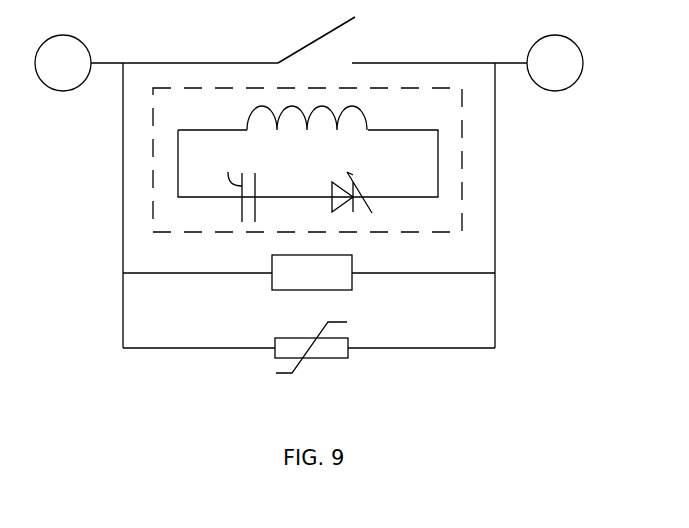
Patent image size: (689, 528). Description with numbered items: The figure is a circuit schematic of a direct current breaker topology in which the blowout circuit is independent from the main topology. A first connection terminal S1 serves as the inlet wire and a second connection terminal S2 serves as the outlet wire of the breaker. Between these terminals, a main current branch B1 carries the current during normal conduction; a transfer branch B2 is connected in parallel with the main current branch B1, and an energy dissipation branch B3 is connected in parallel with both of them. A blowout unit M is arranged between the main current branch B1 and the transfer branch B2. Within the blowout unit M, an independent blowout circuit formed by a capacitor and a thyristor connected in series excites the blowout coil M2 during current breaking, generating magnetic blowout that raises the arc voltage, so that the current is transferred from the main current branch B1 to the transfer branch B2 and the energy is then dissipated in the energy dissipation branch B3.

The first connection terminal S1 is at (63, 63).
The second connection terminal S2 is at (555, 63).
The main current branch B1 is at (153, 63).
The blowout unit M is at (349, 160).
The blowout coil M2 is at (370, 113).
The transfer branch B2 is at (312, 273).
The energy dissipation branch B3 is at (430, 348).